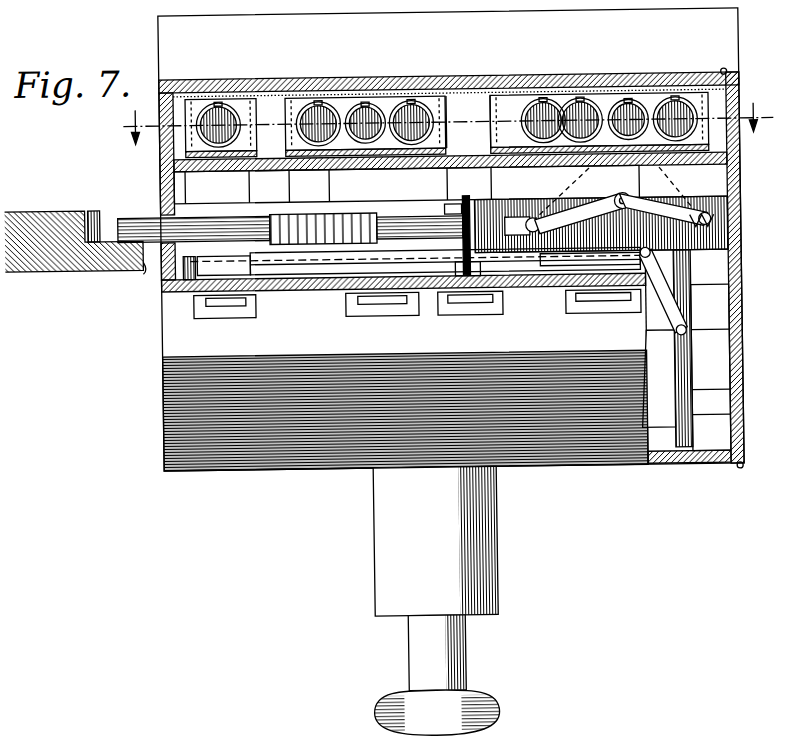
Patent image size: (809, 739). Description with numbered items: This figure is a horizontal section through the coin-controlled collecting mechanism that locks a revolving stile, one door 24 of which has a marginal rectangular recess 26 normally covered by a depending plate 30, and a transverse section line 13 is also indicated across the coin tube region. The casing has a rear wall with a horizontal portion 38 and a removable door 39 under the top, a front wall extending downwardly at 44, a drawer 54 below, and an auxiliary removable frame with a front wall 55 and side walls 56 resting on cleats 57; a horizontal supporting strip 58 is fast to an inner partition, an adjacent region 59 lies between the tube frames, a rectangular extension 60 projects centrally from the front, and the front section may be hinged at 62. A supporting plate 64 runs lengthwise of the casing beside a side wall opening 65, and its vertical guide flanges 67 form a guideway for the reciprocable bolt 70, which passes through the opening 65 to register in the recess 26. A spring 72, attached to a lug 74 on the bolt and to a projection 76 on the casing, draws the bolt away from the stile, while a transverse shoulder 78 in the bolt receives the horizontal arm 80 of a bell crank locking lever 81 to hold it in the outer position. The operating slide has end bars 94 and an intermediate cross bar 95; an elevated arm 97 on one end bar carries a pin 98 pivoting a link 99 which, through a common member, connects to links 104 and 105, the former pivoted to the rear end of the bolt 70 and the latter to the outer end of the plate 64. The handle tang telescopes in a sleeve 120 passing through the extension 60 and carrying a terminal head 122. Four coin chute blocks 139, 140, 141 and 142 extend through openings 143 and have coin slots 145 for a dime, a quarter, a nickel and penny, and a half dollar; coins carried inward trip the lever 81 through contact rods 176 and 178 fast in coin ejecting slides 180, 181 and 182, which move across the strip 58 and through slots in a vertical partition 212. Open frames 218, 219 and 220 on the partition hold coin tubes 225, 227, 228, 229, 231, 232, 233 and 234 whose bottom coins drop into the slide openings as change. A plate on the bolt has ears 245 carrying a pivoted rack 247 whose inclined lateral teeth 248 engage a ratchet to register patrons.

The section line 13- 13 is at (444, 122).
The door 24 is at (55, 268).
The rectangular recess 26 is at (95, 206).
The depending plate 30 is at (143, 268).
The horizontal portion 38 is at (722, 46).
The door 39 is at (729, 77).
The front wall portion 44 is at (405, 262).
The drawer 54 is at (728, 428).
The front wall 55 is at (700, 342).
The side walls 56 is at (722, 300).
The cleats 57 is at (725, 385).
The horizontal supporting strip 58 is at (468, 105).
The top plate 59 is at (450, 78).
The rectangular extension 60 is at (370, 520).
The hinge 62 is at (735, 469).
The supporting plate 64 is at (692, 244).
The opening 65 is at (160, 212).
The vertical guide flanges 67 is at (255, 262).
The bolt 70 is at (125, 218).
The spring 72 is at (522, 230).
The lug 74 is at (498, 205).
The projection 76 is at (722, 228).
The transverse shoulder 78 is at (455, 208).
The horizontal arm 80 is at (467, 200).
The locking lever 81 is at (475, 276).
The end bars 94 is at (692, 290).
The intermediate cross bar 95 is at (285, 262).
The elevated arm 97 is at (686, 348).
The pin 98 is at (664, 350).
The link 99 is at (650, 302).
The link 104 is at (560, 210).
The link 105 is at (660, 210).
The sleeve 120 is at (403, 634).
The terminal head 122 is at (470, 700).
The coin chute block 139 is at (230, 314).
The coin chute block 140 is at (358, 314).
The coin chute block 141 is at (460, 314).
The coin chute block 142 is at (575, 314).
The openings 143 is at (252, 292).
The coin slots 145 is at (600, 303).
The contact rod 176 is at (295, 262).
The contact rod 178 is at (518, 270).
The coin ejecting slide 180 is at (210, 187).
The coin ejecting slide 181 is at (292, 170).
The coin ejecting slide 182 is at (735, 168).
The vertical partition 212 is at (466, 152).
The open frame 218 is at (240, 100).
The open frame 219 is at (345, 100).
The open frame 220 is at (605, 100).
The coin tube 225 is at (220, 100).
The coin tube 227 is at (310, 103).
The coin tube 228 is at (373, 103).
The coin tube 229 is at (422, 103).
The coin tube 231 is at (537, 100).
The coin tube 232 is at (575, 100).
The coin tube 233 is at (638, 103).
The coin tube 234 is at (683, 103).
The ears 245 is at (368, 222).
The rack 247 is at (270, 225).
The inclined lateral teeth 248 is at (325, 222).